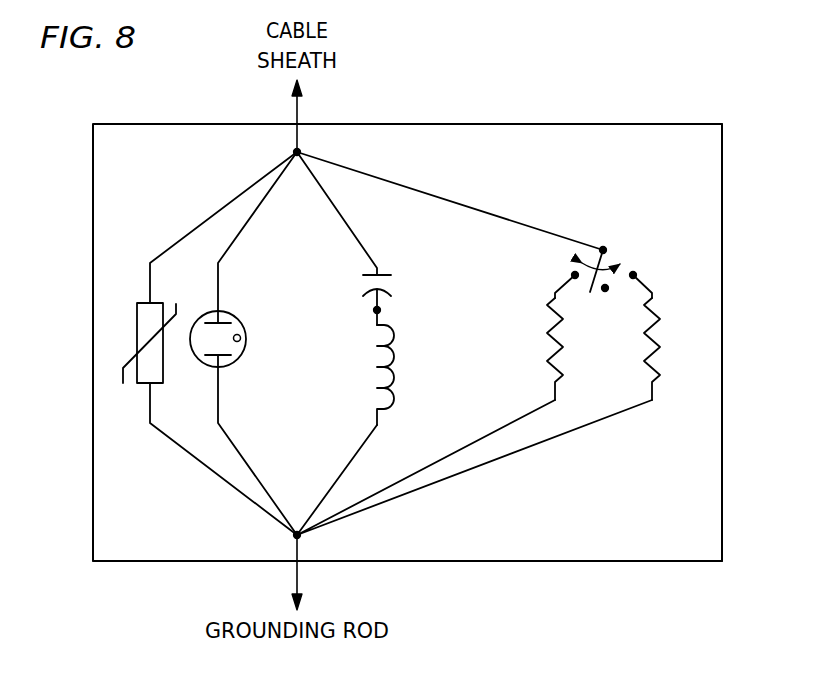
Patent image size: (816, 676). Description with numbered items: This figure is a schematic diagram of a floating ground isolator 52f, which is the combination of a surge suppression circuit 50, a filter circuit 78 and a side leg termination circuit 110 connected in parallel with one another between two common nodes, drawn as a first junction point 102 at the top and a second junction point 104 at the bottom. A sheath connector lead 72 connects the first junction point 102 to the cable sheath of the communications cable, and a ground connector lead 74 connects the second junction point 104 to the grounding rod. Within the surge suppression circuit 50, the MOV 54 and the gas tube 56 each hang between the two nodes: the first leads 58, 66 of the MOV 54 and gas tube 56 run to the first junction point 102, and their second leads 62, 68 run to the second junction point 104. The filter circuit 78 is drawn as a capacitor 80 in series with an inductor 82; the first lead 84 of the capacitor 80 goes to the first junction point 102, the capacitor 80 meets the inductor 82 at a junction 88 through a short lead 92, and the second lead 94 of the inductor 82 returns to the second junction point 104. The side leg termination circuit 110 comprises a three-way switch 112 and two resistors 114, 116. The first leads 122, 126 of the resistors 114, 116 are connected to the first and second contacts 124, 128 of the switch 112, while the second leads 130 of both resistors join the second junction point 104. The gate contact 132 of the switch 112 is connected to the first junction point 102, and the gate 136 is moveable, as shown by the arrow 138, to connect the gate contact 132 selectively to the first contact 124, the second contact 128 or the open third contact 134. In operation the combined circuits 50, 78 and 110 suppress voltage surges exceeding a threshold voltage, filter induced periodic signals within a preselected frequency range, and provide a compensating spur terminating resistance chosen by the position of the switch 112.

The surge suppression circuit 50 is at (175, 527).
The floating ground isolator 52f is at (722, 202).
The MOV 54 is at (144, 322).
The gas tube 56 is at (246, 345).
The first lead of the MOV 58 is at (212, 212).
The second lead of the MOV 62 is at (196, 460).
The first lead of the gas tube 66 is at (247, 226).
The second lead of the gas tube 68 is at (236, 450).
The sheath connector lead 72 is at (297, 134).
The ground connector lead 74 is at (300, 577).
The filter circuit 78 is at (445, 527).
The capacitor 80 is at (372, 297).
The inductor 82 is at (398, 360).
The first lead of the capacitor 84 is at (352, 228).
The junction 88 is at (382, 305).
The conductor 92 is at (373, 317).
The second lead of the inductor 94 is at (345, 458).
The first node 102 is at (300, 152).
The second node 104 is at (296, 538).
The side leg termination circuit 110 is at (700, 447).
The three-way switch 112 is at (583, 208).
The resistor 114 is at (560, 358).
The resistor 116 is at (664, 355).
The first lead of the resistor 122 is at (556, 296).
The first contact 124 is at (573, 274).
The first lead of the resistor 126 is at (654, 296).
The second contact 128 is at (635, 274).
The second leads 130 is at (433, 485).
The gate contact 132 is at (605, 247).
The third contact 134 is at (607, 290).
The gate 136 is at (590, 294).
The arrow 138 is at (621, 262).